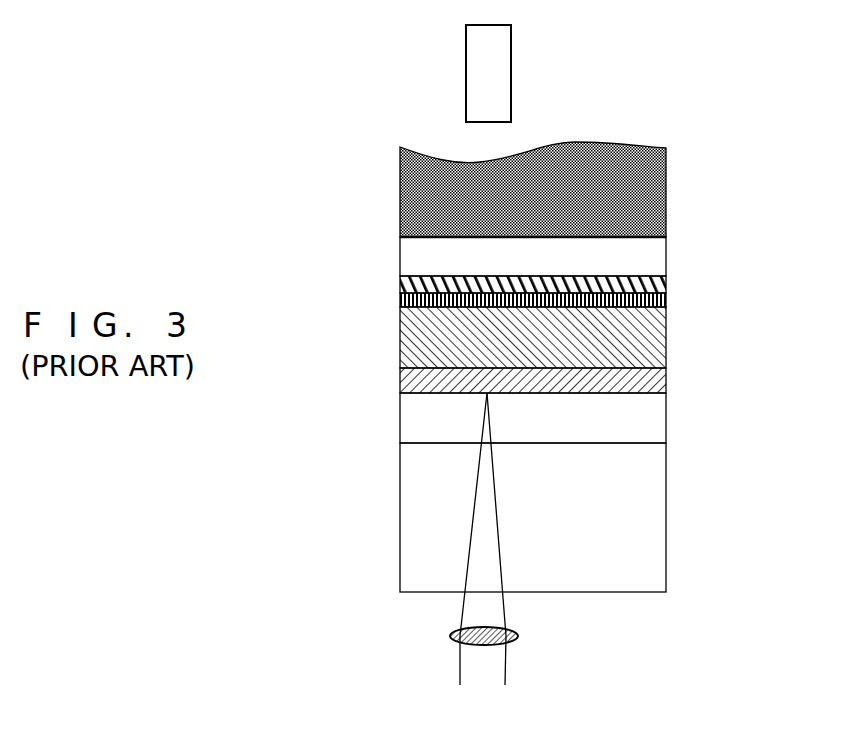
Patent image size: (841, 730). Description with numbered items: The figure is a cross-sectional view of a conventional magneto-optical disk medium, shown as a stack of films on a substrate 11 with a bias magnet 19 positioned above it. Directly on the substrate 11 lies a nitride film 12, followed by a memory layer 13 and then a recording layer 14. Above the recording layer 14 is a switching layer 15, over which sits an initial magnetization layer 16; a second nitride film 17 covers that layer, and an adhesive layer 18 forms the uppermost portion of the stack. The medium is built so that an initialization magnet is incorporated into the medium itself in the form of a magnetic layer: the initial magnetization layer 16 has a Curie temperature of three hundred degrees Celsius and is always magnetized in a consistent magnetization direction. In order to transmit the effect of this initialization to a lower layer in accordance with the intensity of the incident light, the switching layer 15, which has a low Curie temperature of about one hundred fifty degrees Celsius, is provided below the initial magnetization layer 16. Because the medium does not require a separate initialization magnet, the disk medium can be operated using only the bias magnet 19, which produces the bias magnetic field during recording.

The substrate 11 is at (662, 516).
The nitride film 12 is at (667, 417).
The memory layer 13 is at (667, 382).
The recording layer 14 is at (667, 343).
The switching layer 15 is at (667, 305).
The initial magnetization layer 16 is at (667, 283).
The nitride film 17 is at (657, 255).
The adhesive layer 18 is at (667, 197).
The magnet 19 is at (511, 73).